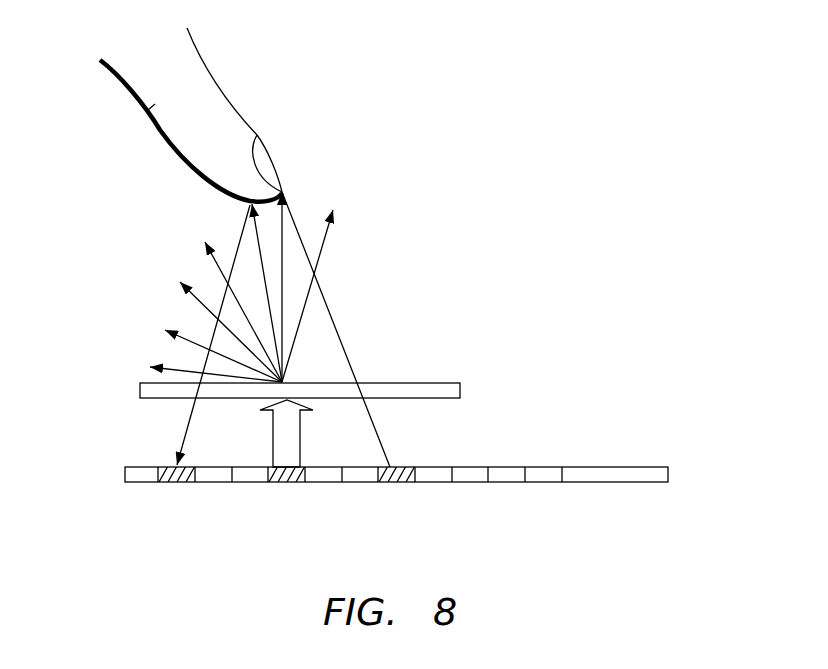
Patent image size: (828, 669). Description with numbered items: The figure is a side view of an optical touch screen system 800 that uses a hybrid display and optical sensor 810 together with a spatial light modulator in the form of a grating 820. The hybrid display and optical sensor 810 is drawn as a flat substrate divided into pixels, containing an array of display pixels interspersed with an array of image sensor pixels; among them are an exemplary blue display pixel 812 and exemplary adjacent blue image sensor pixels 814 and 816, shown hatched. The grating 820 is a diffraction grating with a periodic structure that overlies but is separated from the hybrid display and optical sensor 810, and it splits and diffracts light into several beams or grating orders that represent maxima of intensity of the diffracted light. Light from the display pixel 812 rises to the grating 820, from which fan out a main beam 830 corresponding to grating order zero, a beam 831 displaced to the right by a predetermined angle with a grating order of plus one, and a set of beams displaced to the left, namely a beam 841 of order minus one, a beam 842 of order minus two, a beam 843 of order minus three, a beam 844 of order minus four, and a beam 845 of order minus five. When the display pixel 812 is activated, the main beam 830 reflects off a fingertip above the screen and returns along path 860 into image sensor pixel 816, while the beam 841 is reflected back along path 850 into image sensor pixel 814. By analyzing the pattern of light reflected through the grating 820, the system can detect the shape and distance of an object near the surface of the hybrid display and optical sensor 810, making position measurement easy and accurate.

The optical touch screen system 800 is at (600, 100).
The hybrid display and optical sensor 810 is at (127, 477).
The blue display pixel 812 is at (278, 483).
The blue image sensor pixel 814 is at (178, 483).
The blue image sensor pixel 816 is at (390, 483).
The grating 820 is at (140, 391).
The main beam 830 is at (284, 220).
The beam 831 is at (320, 258).
The beam 841 is at (255, 232).
The beam 842 is at (218, 266).
The beam 843 is at (203, 307).
The beam 844 is at (190, 343).
The beam 845 is at (177, 372).
The reflected light path 850 is at (185, 438).
The reflected light path 860 is at (385, 440).